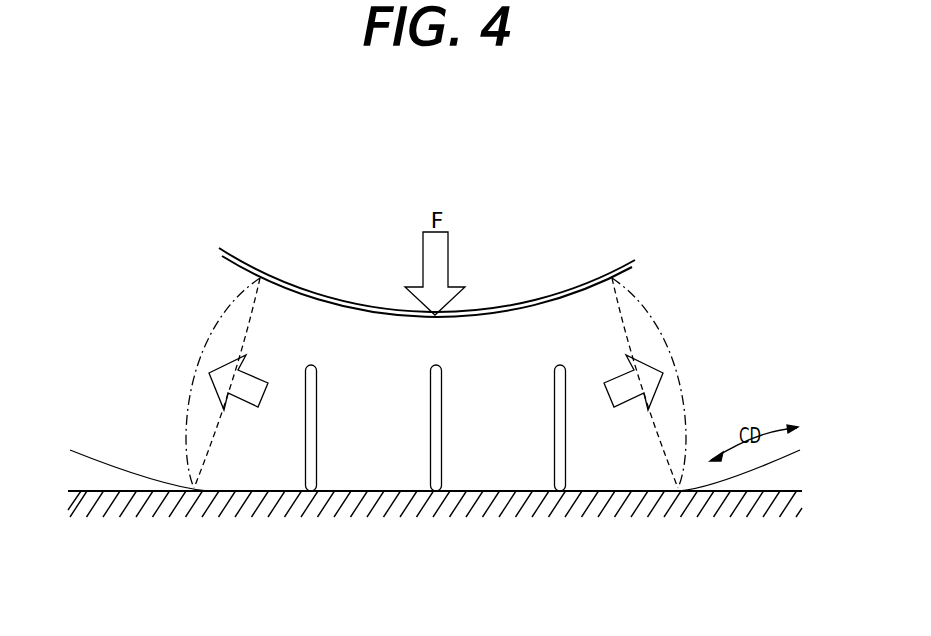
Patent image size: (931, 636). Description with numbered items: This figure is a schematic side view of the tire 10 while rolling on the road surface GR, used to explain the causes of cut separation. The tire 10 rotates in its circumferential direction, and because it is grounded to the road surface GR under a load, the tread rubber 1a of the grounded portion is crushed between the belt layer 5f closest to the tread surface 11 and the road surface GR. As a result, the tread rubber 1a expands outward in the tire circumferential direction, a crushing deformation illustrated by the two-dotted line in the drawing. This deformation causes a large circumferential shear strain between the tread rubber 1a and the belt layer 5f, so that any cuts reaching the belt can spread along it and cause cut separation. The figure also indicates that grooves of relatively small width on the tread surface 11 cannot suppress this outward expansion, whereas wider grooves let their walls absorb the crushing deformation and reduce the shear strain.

The tire 10 is at (157, 263).
The tread rubber 1a is at (302, 326).
The belt layer 5f is at (538, 303).
The tread surface 11 is at (112, 470).
The road surface GR is at (423, 561).